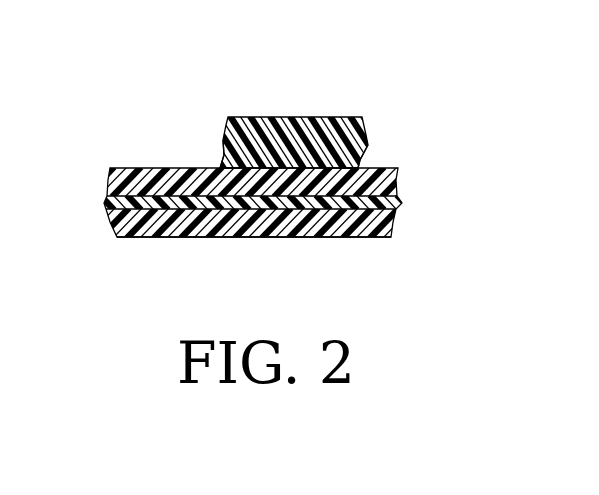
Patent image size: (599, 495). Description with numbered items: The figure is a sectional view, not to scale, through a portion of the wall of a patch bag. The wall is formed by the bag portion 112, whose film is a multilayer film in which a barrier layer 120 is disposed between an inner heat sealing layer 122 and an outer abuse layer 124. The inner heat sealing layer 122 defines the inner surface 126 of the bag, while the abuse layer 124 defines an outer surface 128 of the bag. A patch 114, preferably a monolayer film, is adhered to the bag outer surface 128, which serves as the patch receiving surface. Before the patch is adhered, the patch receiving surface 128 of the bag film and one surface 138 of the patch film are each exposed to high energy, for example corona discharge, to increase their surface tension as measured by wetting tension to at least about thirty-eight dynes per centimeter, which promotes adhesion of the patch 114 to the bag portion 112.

The bag portion 112 is at (247, 220).
The patch 114 is at (273, 117).
The barrier layer 120 is at (107, 201).
The inner heat sealing layer 122 is at (110, 220).
The outer abuse layer 124 is at (110, 186).
The inner surface 126 is at (219, 237).
The outer surface 128 is at (370, 166).
The surface of the patch film 138 is at (217, 167).